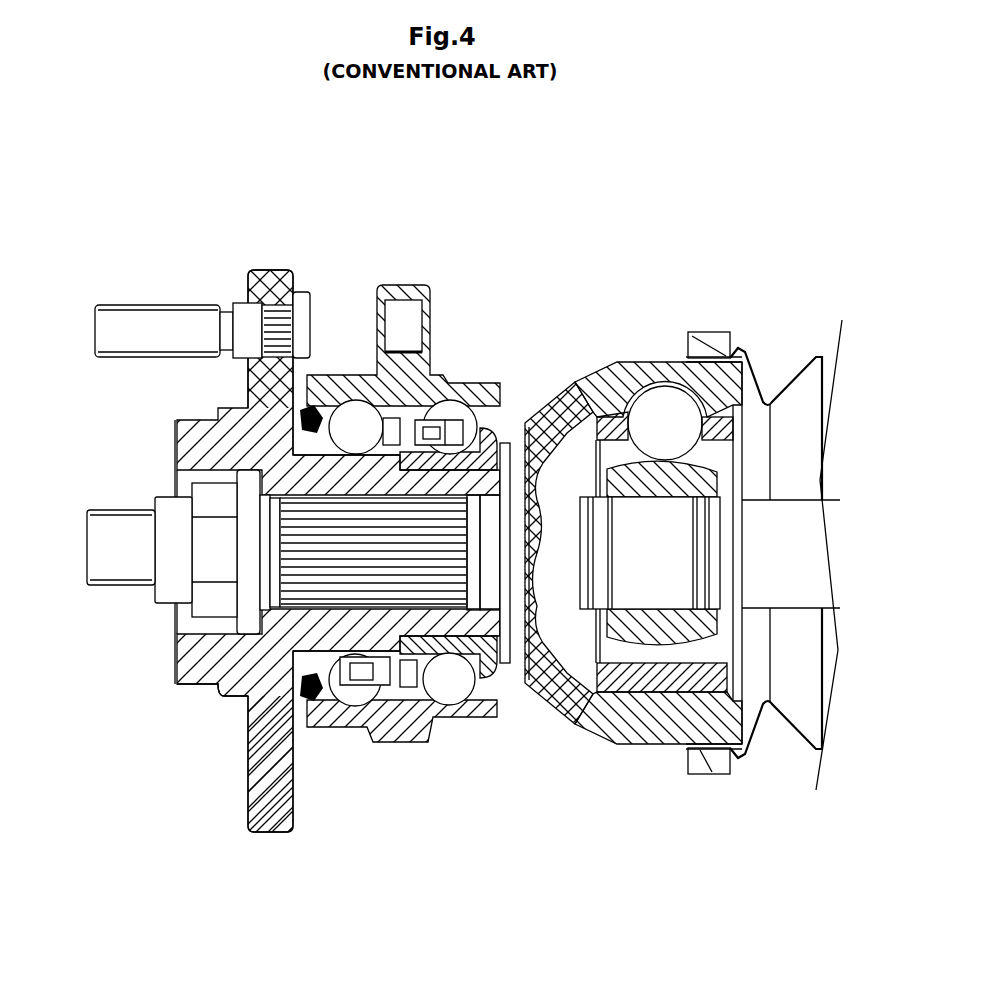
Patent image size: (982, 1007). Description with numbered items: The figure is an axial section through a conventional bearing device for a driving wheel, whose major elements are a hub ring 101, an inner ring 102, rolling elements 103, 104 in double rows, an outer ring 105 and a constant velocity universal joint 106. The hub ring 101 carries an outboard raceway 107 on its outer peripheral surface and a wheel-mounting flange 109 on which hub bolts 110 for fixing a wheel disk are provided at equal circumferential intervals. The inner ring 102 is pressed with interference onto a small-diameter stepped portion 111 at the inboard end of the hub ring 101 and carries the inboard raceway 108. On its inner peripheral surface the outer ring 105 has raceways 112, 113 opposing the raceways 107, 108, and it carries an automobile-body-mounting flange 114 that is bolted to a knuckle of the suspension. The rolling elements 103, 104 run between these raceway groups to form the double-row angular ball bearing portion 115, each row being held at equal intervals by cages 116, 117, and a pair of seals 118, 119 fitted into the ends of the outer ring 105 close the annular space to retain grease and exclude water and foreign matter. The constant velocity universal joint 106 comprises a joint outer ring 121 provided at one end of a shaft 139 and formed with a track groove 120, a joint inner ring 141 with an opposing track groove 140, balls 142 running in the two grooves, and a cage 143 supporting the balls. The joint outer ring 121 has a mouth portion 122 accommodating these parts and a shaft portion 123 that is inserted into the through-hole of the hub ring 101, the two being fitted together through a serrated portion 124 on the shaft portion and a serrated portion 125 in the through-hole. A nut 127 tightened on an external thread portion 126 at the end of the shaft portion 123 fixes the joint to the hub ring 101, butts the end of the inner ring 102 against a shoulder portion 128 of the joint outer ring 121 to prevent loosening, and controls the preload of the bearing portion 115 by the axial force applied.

The hub ring 101 is at (200, 680).
The inner ring 102 is at (528, 670).
The rolling elements 103 is at (250, 440).
The rolling elements 104 is at (460, 692).
The outer ring 105 is at (405, 745).
The constant velocity universal joint 106 is at (663, 346).
The outboard raceway 107 is at (318, 460).
The inboard raceway 108 is at (497, 672).
The wheel-mounting flange 109 is at (268, 278).
The hub bolts 110 is at (147, 318).
The small-diameter stepped portion 111 is at (560, 400).
The raceway 112 is at (353, 425).
The raceway 113 is at (445, 695).
The automobile-body-mounting flange 114 is at (402, 288).
The bearing portion 115 is at (381, 748).
The cage 116 is at (355, 690).
The cage 117 is at (444, 420).
The seal 118 is at (305, 420).
The seal 119 is at (513, 443).
The track groove 120 is at (742, 352).
The joint outer ring 121 is at (668, 760).
The mouth portion 122 is at (627, 370).
The shaft portion 123 is at (285, 577).
The serrated portion 124 is at (230, 697).
The serrated portion 125 is at (557, 663).
The external thread portion 126 is at (113, 590).
The nut 127 is at (210, 540).
The shoulder portion 128 is at (527, 424).
The shaft 139 is at (786, 585).
The track groove 140 is at (808, 480).
The joint inner ring 141 is at (622, 697).
The balls 142 is at (722, 338).
The cage 143 is at (707, 750).